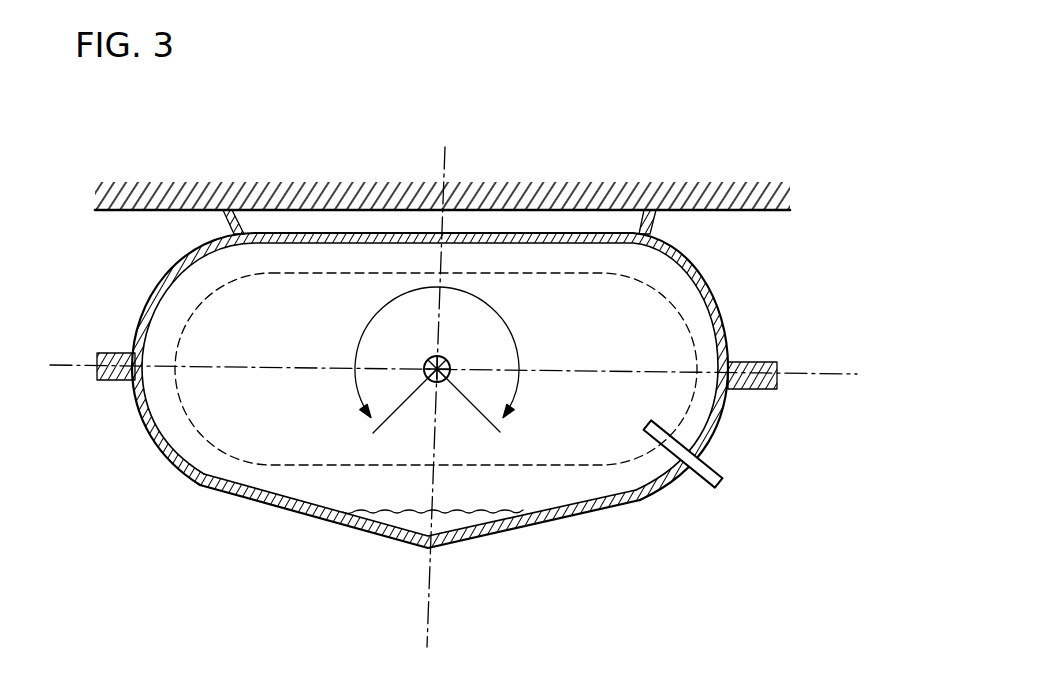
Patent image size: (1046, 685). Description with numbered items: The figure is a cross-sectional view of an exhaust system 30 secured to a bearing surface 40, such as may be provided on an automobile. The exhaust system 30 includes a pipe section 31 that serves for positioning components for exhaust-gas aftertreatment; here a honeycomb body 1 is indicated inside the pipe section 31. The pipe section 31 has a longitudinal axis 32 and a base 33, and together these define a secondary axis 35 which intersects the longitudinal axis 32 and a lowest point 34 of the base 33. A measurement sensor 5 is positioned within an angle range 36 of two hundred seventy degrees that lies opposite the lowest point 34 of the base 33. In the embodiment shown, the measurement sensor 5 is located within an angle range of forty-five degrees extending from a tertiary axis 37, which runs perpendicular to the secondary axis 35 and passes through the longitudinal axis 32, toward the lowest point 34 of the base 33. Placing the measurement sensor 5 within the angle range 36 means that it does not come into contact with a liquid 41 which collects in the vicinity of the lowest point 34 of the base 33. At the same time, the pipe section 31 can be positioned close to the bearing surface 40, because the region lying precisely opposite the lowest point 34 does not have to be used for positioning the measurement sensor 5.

The exhaust system 30 is at (755, 170).
The bearing surface 40 is at (290, 211).
The pipe section 31 is at (152, 298).
The honeycomb body 1 is at (213, 428).
The longitudinal axis 32 is at (447, 363).
The angle range 36 is at (522, 343).
The base 33 is at (233, 502).
The lowest point 34 is at (430, 548).
The secondary axis 35 is at (425, 623).
The tertiary axis 37 is at (837, 371).
The liquid 41 is at (400, 518).
The measurement sensor 5 is at (717, 467).